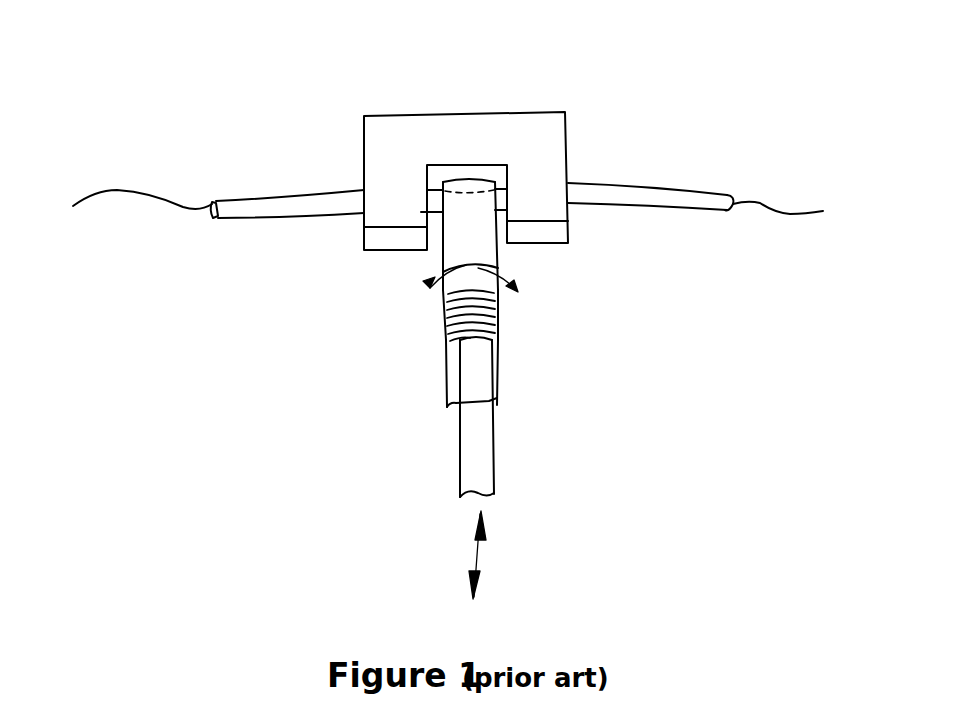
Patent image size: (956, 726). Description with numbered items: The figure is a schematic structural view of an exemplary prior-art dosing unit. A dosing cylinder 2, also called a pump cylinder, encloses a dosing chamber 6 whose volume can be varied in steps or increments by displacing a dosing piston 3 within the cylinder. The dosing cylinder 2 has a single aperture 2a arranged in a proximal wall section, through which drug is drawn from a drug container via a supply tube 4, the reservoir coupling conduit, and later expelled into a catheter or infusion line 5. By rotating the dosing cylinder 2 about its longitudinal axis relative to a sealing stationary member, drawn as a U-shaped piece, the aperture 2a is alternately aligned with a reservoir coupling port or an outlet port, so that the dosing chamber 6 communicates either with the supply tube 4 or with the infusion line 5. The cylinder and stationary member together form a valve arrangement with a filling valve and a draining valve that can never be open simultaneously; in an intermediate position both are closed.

The dosing cylinder 2 is at (500, 370).
The aperture 2a is at (467, 199).
The dosing piston 3 is at (498, 317).
The supply tube 4 is at (197, 198).
The infusion line 5 is at (712, 209).
The dosing chamber 6 is at (480, 248).